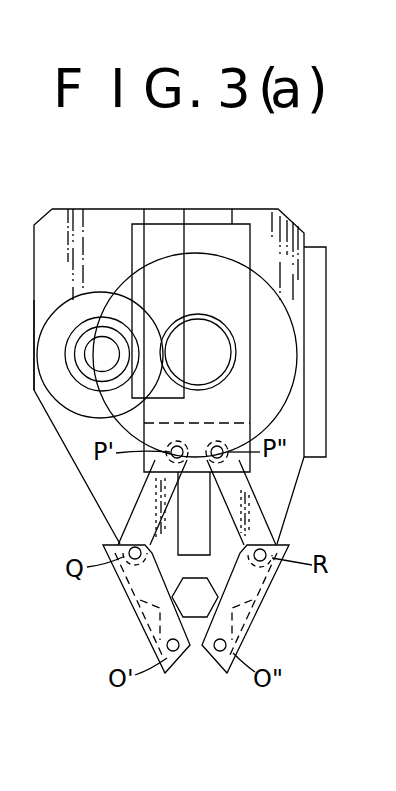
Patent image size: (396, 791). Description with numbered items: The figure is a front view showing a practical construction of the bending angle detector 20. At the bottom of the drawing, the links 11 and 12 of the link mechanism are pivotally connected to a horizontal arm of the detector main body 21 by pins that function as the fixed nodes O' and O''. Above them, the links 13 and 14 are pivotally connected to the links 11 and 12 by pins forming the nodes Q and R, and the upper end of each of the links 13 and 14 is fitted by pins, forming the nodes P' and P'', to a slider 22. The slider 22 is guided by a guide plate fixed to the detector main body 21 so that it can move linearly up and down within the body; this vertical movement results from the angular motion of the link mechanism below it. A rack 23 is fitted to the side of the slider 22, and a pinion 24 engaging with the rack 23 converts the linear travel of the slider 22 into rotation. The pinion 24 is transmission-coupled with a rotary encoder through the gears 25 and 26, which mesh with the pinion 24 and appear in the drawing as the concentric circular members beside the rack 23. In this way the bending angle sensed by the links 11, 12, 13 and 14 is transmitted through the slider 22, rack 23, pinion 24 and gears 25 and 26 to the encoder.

The bending angle detector 20 is at (99, 203).
The detector main body 21 is at (58, 232).
The slider 22 is at (237, 233).
The rack 23 is at (165, 235).
The pinion 24 is at (88, 378).
The gear 25 is at (92, 408).
The gear 26 is at (233, 356).
The link 13 is at (137, 507).
The link 14 is at (255, 503).
The link 11 is at (135, 608).
The link 12 is at (245, 602).